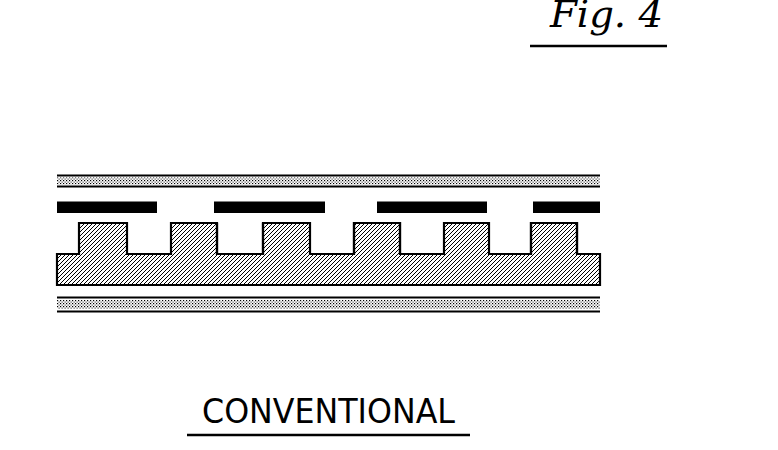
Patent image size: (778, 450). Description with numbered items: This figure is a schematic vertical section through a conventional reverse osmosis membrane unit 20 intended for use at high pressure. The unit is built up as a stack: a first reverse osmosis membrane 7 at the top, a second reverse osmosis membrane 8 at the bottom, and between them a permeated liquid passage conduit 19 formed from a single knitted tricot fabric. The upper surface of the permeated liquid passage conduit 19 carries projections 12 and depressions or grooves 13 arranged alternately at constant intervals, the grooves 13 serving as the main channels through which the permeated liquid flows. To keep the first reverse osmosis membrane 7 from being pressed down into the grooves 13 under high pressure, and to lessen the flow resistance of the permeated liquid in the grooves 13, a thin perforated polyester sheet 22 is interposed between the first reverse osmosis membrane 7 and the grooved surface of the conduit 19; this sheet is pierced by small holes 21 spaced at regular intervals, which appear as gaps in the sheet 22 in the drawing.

The first reverse osmosis membrane 7 is at (492, 178).
The second reverse osmosis membrane 8 is at (528, 313).
The projection 12 is at (375, 242).
The groove 13 is at (239, 237).
The permeated liquid passage conduit 19 is at (590, 277).
The reverse osmosis membrane unit 20 is at (588, 243).
The small hole 21 is at (190, 207).
The perforated polyester sheet 22 is at (283, 204).